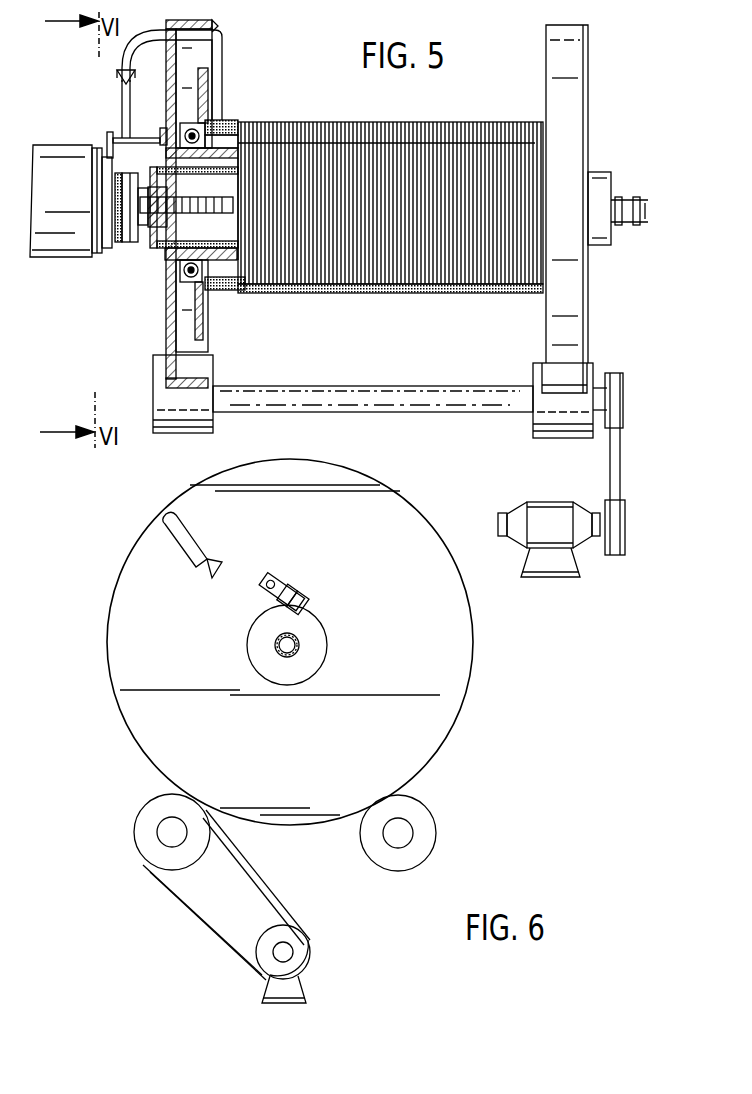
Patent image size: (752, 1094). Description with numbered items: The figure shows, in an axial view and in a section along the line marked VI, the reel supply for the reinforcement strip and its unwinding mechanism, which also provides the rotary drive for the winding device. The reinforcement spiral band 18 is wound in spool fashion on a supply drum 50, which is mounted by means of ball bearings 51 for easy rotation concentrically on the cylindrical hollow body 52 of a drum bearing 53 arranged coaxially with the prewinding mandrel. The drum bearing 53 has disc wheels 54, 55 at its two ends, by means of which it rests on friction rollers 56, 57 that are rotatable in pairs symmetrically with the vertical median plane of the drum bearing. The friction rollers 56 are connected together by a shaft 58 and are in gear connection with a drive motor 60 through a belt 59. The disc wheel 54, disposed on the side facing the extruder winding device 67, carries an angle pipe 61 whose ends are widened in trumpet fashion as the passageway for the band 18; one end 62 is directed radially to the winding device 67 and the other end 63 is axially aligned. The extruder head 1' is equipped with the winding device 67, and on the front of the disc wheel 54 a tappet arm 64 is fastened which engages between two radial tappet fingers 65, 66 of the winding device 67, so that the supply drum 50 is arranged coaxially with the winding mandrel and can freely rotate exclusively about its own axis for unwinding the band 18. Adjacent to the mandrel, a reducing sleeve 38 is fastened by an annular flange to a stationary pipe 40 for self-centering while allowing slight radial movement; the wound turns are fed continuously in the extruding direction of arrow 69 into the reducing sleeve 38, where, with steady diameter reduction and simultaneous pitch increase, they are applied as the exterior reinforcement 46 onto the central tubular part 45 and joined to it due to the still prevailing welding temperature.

In FIG. 5, the extruder head 1' is at (61, 224).
In FIG. 5, the reinforcement spiral band 18 is at (122, 95).
In FIG. 5, the reducing sleeve 38 is at (166, 193).
In FIG. 5, the stationary pipe 40 is at (606, 194).
In FIG. 5, the central tubular part 45 is at (612, 212).
In FIG. 5, the exterior reinforcement 46 is at (638, 227).
In FIG. 5, the supply drum 50 is at (208, 104).
In FIG. 5, the ball bearings 51 is at (232, 136).
In FIG. 5, the cylindrical hollow body 52 is at (238, 158).
In FIG. 5, the drum bearing 53 is at (166, 275).
In FIG. 5, the disc wheel 54 is at (166, 328).
In FIG. 5, the disc wheel 55 is at (577, 328).
In FIG. 5, the friction rollers 56 is at (190, 420).
In FIG. 6, the friction rollers 56 is at (150, 852).
In FIG. 6, the friction roller 57 is at (415, 860).
In FIG. 5, the shaft 58 is at (370, 404).
In FIG. 5, the belt 59 is at (612, 482).
In FIG. 6, the belt 59 is at (208, 921).
In FIG. 5, the drive motor 60 is at (533, 556).
In FIG. 6, the drive motor 60 is at (295, 940).
In FIG. 5, the angle pipe 61 is at (150, 40).
In FIG. 6, the angle pipe 61 is at (165, 537).
In FIG. 5, the end of angle pipe 62 is at (117, 73).
In FIG. 6, the end of angle pipe 62 is at (208, 572).
In FIG. 5, the end of angle pipe 63 is at (219, 29).
In FIG. 5, the tappet arm 64 is at (138, 136).
In FIG. 6, the tappet arm 64 is at (322, 578).
In FIG. 6, the tappet finger 65 is at (303, 592).
In FIG. 6, the tappet finger 66 is at (320, 606).
In FIG. 5, the extruder winding device 67 is at (106, 253).
In FIG. 6, the extruder winding device 67 is at (310, 665).
In FIG. 5, the extruding direction arrow 69 is at (388, 326).